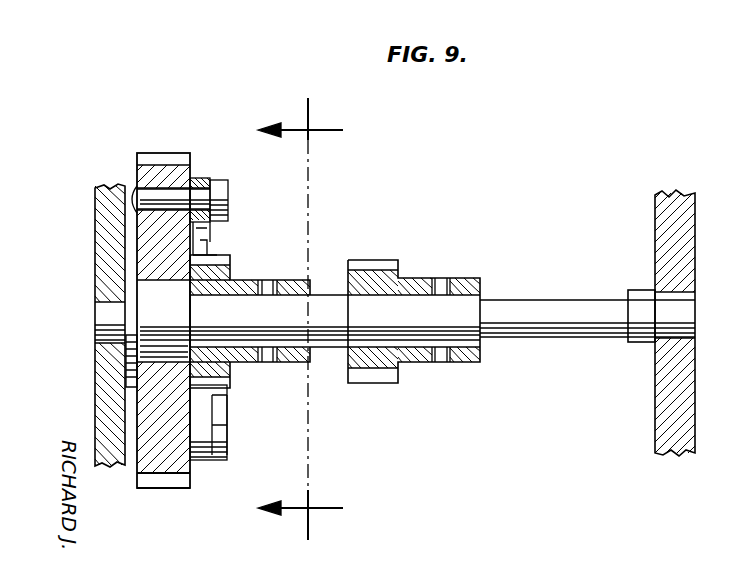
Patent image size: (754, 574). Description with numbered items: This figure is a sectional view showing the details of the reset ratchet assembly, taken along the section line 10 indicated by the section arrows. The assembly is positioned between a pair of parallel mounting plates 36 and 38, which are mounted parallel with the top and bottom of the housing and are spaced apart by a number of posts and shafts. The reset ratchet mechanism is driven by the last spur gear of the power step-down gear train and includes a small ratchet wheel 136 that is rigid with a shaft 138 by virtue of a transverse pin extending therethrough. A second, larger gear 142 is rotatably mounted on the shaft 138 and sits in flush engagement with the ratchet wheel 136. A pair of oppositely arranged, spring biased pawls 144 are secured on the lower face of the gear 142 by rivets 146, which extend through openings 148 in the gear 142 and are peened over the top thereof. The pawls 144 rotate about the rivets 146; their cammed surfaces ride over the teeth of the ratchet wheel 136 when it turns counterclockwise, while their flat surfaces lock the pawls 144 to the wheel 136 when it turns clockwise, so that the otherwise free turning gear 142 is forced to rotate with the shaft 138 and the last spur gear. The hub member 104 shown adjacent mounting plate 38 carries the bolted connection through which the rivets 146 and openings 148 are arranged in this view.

The section line 10- 10 is at (303, 320).
The mounting plate 36 is at (696, 220).
The mounting plate 38 is at (95, 200).
The hub 104 is at (147, 157).
The ratchet wheel 136 is at (230, 270).
The shaft 138 is at (320, 292).
The gear 142 is at (153, 490).
The pawls 144 is at (198, 180).
The rivets 146 is at (228, 196).
The openings 148 is at (162, 188).